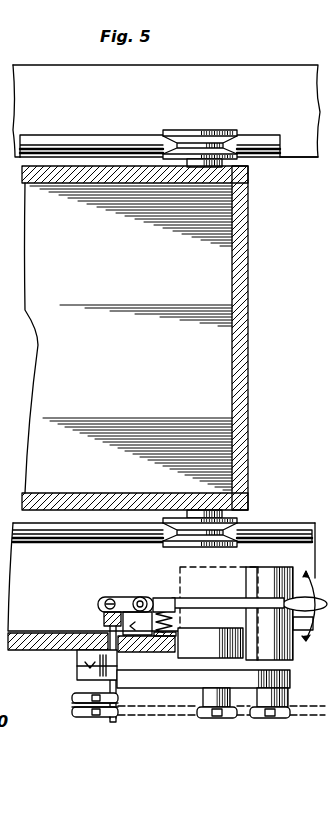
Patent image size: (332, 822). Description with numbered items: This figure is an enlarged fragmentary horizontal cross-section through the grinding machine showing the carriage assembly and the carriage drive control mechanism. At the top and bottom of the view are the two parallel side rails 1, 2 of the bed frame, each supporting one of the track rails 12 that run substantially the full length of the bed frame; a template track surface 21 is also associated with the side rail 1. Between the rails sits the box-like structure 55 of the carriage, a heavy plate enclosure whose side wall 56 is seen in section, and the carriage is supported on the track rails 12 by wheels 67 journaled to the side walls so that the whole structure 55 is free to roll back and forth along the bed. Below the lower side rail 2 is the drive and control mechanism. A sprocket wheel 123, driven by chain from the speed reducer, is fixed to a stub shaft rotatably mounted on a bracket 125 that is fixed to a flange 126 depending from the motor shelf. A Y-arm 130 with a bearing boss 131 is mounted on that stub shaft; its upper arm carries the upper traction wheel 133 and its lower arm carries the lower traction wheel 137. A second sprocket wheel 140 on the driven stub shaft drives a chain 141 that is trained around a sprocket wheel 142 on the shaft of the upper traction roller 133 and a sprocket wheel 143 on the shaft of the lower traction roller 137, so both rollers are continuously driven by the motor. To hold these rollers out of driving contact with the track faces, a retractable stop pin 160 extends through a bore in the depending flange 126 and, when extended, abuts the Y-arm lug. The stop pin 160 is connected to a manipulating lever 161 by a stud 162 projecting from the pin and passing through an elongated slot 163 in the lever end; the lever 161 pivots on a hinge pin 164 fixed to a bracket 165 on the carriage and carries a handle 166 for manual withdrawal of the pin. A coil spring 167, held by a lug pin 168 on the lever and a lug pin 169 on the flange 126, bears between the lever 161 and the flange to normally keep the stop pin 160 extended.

The side rail 1 is at (288, 76).
The side rail 2 is at (303, 538).
The rails 12 is at (87, 118).
The track surface 21 is at (19, 383).
The box-like structure 55 is at (156, 338).
The side wall 56 is at (78, 177).
The wheels 67 is at (199, 131).
The sprocket wheel 123 is at (72, 700).
The bracket 125 is at (77, 668).
The flange 126 is at (21, 648).
The Y-arm 130 is at (130, 683).
The bearing boss 131 is at (107, 724).
The upper traction wheel 133 is at (272, 558).
The lower traction wheel 137 is at (210, 643).
The second sprocket wheel 140 is at (85, 718).
The drive chain 141 is at (134, 712).
The sprocket wheel 142 is at (203, 719).
The sprocket wheel 143 is at (262, 719).
The stop pin 160 is at (96, 628).
The manipulating lever 161 is at (165, 598).
The stud 162 is at (106, 597).
The elongated slot 163 is at (100, 601).
The hinge pin 164 is at (140, 596).
The bracket 165 is at (128, 648).
The handle 166 is at (307, 619).
The coil spring 167 is at (174, 620).
The lug pin 168 is at (176, 606).
The lug pin 169 is at (163, 662).